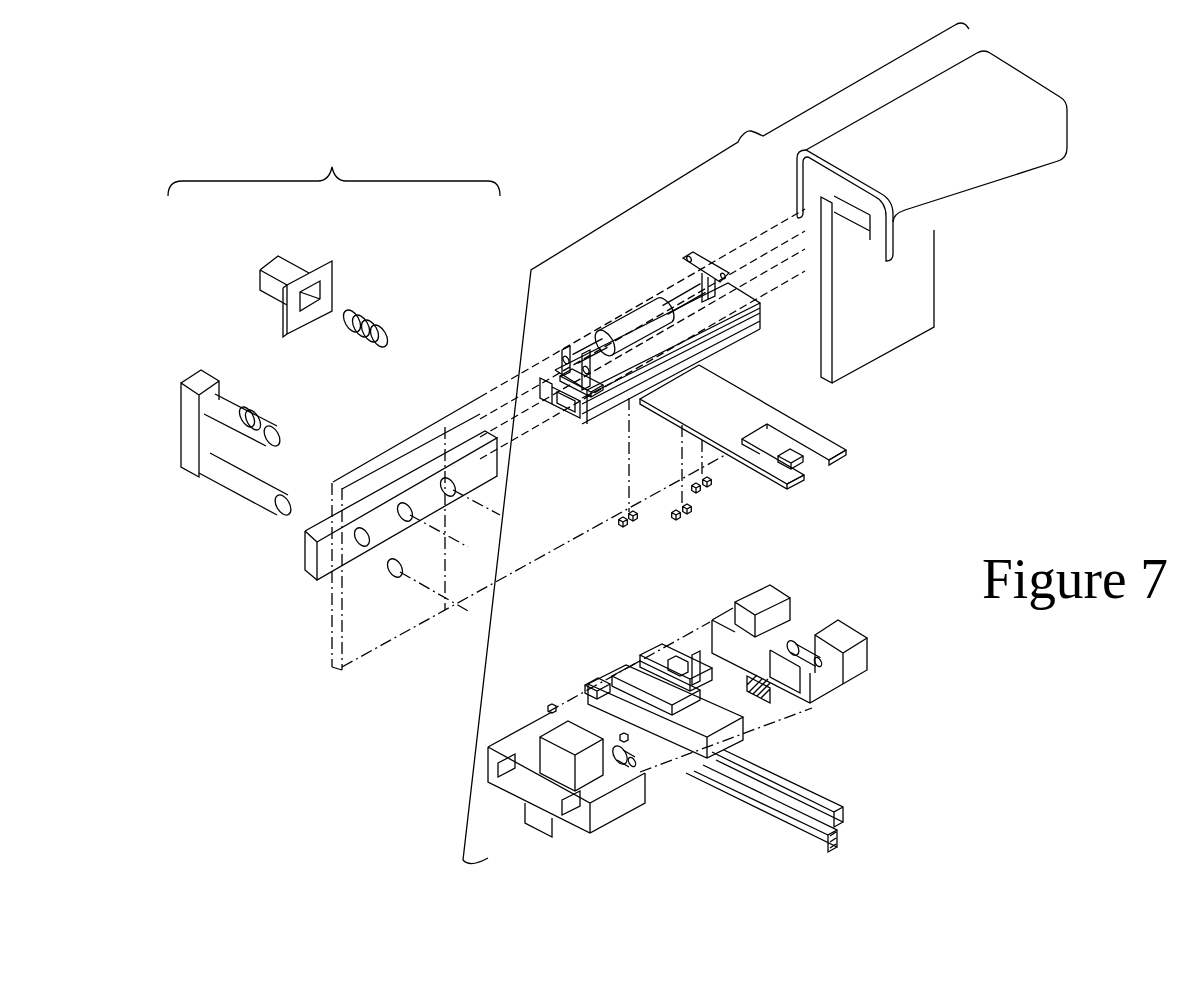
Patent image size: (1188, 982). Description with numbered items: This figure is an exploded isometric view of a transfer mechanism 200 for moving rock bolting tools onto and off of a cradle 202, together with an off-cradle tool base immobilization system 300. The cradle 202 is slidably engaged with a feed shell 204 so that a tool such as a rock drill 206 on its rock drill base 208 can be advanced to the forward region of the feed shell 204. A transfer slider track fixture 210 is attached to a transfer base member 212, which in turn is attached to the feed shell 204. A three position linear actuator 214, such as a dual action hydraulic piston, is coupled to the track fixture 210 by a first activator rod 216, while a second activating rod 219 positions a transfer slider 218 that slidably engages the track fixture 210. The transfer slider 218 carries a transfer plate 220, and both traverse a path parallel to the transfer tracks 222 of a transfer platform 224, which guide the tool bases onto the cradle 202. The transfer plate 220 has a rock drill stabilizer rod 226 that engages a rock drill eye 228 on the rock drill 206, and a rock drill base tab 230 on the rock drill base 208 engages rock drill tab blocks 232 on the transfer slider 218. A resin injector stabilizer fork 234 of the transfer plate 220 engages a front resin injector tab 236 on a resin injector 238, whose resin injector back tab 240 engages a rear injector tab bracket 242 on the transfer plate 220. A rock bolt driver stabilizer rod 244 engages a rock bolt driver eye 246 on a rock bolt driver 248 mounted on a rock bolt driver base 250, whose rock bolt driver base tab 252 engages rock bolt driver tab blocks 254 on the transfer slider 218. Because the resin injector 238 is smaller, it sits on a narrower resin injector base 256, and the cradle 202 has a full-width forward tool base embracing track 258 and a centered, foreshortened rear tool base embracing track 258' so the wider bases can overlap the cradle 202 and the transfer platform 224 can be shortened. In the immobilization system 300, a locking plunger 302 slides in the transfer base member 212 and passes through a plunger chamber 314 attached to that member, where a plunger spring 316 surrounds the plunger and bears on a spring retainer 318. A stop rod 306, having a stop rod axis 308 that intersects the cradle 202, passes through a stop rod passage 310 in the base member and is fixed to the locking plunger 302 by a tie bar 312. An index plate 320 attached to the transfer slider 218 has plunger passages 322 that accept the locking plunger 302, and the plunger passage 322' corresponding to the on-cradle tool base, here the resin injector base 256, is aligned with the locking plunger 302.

The transfer mechanism 200 is at (733, 127).
The cradle 202 is at (740, 744).
The feed shell 204 is at (840, 834).
The rock drill 206 is at (823, 670).
The rock drill base 208 is at (765, 698).
The transfer slider track fixture 210 is at (998, 182).
The transfer base member 212 is at (350, 650).
The three position linear actuator 214 is at (627, 327).
The first activator rod 216 is at (681, 300).
The transfer slider 218 is at (588, 428).
The second activating rod 219 is at (585, 348).
The transfer plate 220 is at (717, 395).
The transfer tracks 222 is at (852, 640).
The transfer platform 224 is at (592, 825).
The rock drill stabilizer rod 226 is at (836, 446).
The rock drill eye 228 is at (813, 648).
The rock drill base tab 230 is at (740, 598).
The rock drill tab blocks 232 is at (708, 493).
The resin injector stabilizer fork 234 is at (797, 455).
The front resin injector tab 236 is at (697, 665).
The resin injector 238 is at (622, 660).
The resin injector back tab 240 is at (677, 672).
The rear injector tab bracket 242 is at (688, 517).
The rock bolt driver stabilizer rod 244 is at (768, 488).
The rock bolt driver eye 246 is at (624, 738).
The rock bolt driver 248 is at (598, 747).
The rock bolt driver base 250 is at (537, 762).
The rock bolt driver base tab 252 is at (550, 710).
The rock bolt driver tab blocks 254 is at (636, 521).
The resin injector base 256 is at (588, 688).
The forward tool base embracing track 258 is at (716, 718).
The rear tool base embracing track 258' is at (602, 674).
The immobilization system 300 is at (332, 158).
The locking plunger 302 is at (268, 423).
The stop rod 306 is at (255, 495).
The stop rod axis 308 is at (305, 518).
The stop rod passage 310 is at (394, 578).
The tie bar 312 is at (179, 466).
The plunger chamber 314 is at (323, 279).
The plunger spring 316 is at (384, 337).
The spring retainer 318 is at (250, 406).
The index plate 320 is at (327, 556).
The plunger passages 322 is at (425, 535).
The plunger passage corresponding to the on-cradle tool base 322' is at (437, 494).